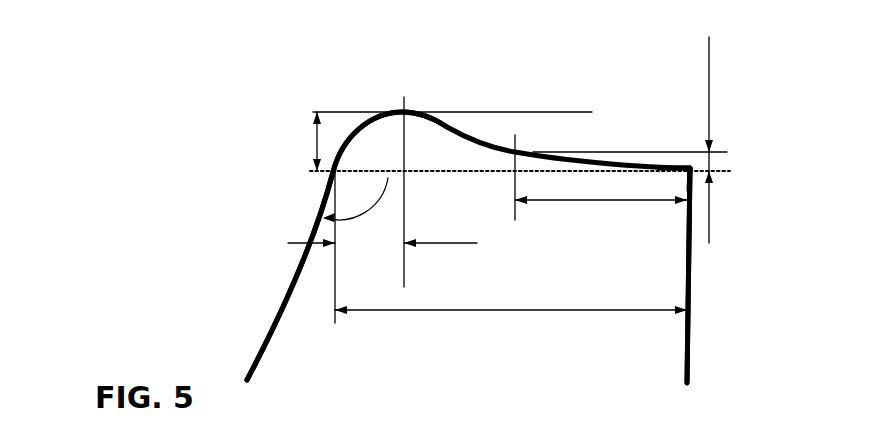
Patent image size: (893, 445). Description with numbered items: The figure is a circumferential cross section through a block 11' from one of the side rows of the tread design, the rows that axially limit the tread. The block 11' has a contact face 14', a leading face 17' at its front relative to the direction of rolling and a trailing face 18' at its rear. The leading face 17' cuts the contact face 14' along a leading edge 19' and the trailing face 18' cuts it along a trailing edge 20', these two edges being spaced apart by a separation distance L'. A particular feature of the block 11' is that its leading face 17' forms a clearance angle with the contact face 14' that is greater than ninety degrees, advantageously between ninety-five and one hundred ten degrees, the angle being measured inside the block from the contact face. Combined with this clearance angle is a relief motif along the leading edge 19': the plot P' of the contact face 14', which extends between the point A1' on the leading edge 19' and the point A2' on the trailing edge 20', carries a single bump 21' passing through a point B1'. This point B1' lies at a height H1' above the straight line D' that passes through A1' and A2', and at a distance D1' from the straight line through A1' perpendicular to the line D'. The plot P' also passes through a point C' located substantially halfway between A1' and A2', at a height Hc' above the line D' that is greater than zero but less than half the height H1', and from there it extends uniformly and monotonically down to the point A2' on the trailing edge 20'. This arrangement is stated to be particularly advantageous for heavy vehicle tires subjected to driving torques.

The block 11' is at (182, 84).
The contact face 14' is at (468, 222).
The leading face 17' is at (254, 276).
The trailing face 18' is at (736, 275).
The leading edge 19' is at (444, 188).
The trailing edge 20' is at (723, 196).
The bump 21' is at (370, 109).
The point on the leading edge A1' is at (295, 195).
The point on the trailing edge A2' is at (741, 164).
The point of the bump B1' is at (442, 163).
The point substantially halfway between A1' and A2' C' is at (621, 157).
The straight line passing through A1' and A2' D' is at (461, 203).
The distance D1' is at (382, 247).
The height H1' is at (426, 141).
The height Hc' is at (733, 140).
The separation distance L' is at (511, 292).
The plot of the contact face P' is at (490, 89).